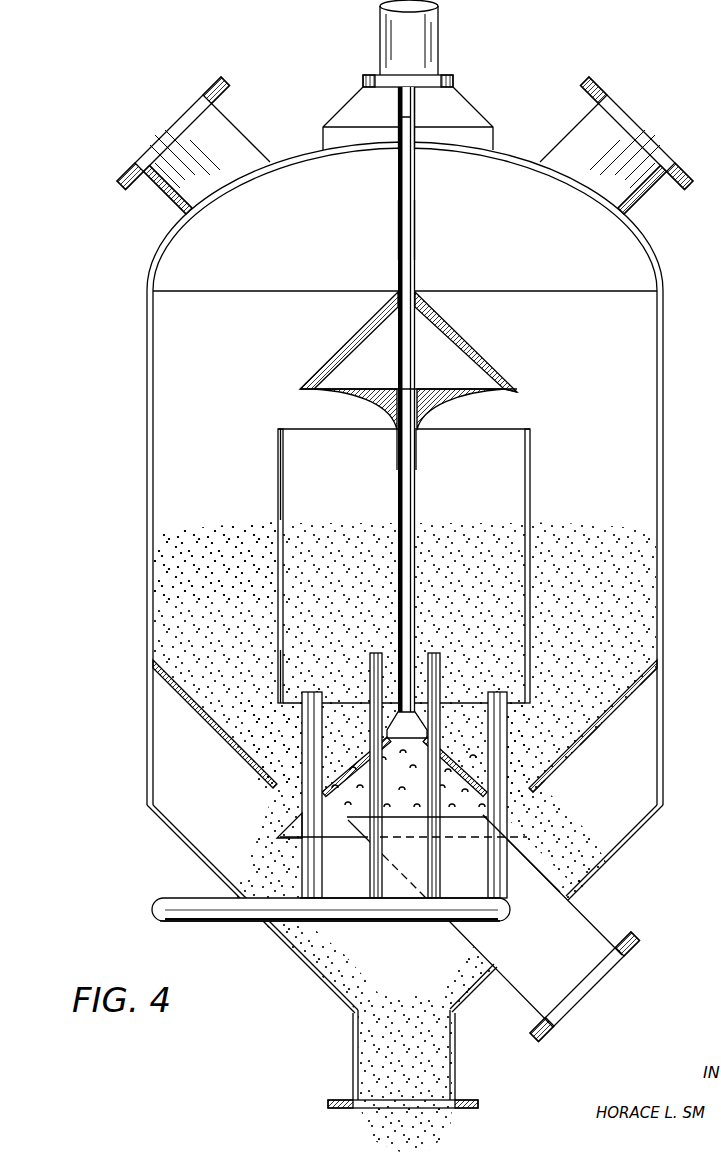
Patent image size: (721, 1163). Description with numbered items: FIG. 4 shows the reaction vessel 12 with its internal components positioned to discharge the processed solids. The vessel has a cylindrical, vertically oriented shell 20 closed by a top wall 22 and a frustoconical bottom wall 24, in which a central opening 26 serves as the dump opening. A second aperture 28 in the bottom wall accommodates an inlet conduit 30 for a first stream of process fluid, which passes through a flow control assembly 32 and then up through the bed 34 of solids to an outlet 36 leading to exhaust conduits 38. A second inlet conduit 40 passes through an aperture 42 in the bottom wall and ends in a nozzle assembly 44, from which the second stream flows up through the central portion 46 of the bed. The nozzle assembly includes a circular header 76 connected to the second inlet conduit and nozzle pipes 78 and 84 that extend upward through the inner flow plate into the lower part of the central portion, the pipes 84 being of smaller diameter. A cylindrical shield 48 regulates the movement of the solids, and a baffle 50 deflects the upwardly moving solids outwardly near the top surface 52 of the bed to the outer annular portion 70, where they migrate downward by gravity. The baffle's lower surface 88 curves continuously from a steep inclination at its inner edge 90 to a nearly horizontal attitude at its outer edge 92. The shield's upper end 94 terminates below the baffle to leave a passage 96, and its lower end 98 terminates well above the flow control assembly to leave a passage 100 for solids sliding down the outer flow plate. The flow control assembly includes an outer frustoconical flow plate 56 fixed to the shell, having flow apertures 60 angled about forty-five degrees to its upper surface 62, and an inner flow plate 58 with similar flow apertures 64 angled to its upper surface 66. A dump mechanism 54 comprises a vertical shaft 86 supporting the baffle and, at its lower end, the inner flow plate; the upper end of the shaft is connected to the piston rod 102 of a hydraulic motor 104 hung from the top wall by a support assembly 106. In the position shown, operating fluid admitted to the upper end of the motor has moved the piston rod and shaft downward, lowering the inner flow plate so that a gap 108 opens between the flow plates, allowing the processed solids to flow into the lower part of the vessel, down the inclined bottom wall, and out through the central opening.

The reaction vessel 12 is at (124, 360).
The shell 20 is at (147, 505).
The top wall 22 is at (300, 148).
The frustoconical bottom wall 24 is at (175, 833).
The central opening 26 is at (373, 1098).
The second aperture 28 is at (569, 903).
The inlet conduit 30 is at (600, 986).
The flow control assembly 32 is at (226, 746).
The bed 34 is at (170, 603).
The outlet 36 is at (618, 213).
The exhaust conduits 38 is at (654, 194).
The second inlet conduit 40 is at (152, 880).
The aperture 42 is at (259, 921).
The nozzle assembly 44 is at (515, 870).
The central portion 46 is at (472, 532).
The shield 48 is at (279, 474).
The baffle 50 is at (456, 276).
The top surface 52 is at (234, 528).
The dump mechanism 54 is at (395, 187).
The outer flow plate 56 is at (638, 695).
The inner flow plate 58 is at (288, 843).
The flow apertures 60 is at (578, 752).
The upper surface 62 is at (648, 667).
The flow apertures 64 is at (447, 752).
The upper surface 66 is at (432, 742).
The outer annular portion 70 is at (172, 531).
The circular header 76 is at (363, 923).
The nozzle pipes 78 is at (321, 858).
The nozzle pipes 84 is at (381, 831).
The vertical shaft 86 is at (398, 226).
The lower surface 88 is at (449, 394).
The inner edge 90 is at (396, 434).
The outer edge 92 is at (515, 394).
The upper end 94 is at (299, 428).
The passage 96 is at (285, 420).
The lower end 98 is at (288, 705).
The passage 100 is at (255, 722).
The piston rod 102 is at (413, 108).
The hydraulic motor 104 is at (438, 61).
The support assembly 106 is at (350, 104).
The gap 108 is at (524, 789).